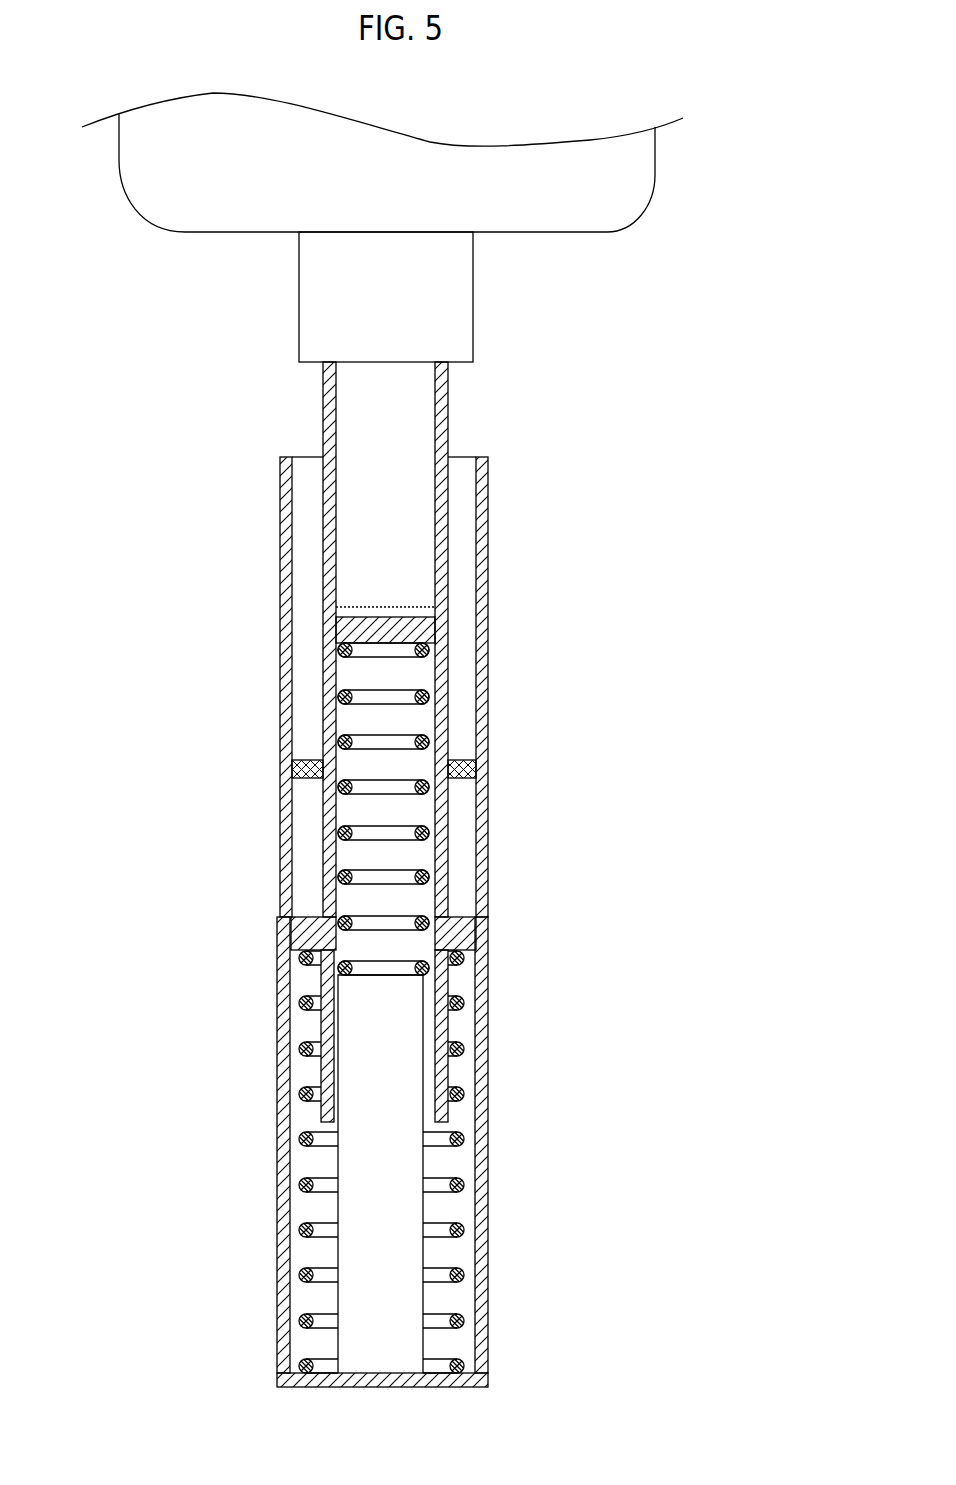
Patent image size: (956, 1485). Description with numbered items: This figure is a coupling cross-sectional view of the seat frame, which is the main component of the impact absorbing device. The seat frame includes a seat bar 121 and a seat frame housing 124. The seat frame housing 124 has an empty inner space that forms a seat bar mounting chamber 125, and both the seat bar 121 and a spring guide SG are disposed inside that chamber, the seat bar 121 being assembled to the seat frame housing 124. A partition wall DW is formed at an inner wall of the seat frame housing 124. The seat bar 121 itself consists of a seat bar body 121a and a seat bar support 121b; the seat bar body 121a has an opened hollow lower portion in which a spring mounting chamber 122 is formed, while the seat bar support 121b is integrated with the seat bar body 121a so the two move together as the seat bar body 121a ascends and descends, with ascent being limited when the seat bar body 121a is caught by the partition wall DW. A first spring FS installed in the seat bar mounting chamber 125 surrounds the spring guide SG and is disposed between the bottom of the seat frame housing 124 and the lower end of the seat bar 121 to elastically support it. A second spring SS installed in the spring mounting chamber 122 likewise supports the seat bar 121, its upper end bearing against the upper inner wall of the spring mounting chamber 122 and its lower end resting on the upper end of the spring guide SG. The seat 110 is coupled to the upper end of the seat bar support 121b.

The seat 110 is at (582, 202).
The seat bar 121 is at (266, 742).
The seat bar body 121a is at (323, 1019).
The seat bar support 121b is at (323, 672).
The spring mounting chamber 122 is at (419, 860).
The seat frame housing 124 is at (483, 1163).
The seat bar mounting chamber 125 is at (462, 593).
The partition wall DW is at (465, 760).
The second spring SS is at (445, 878).
The first spring FS is at (455, 1055).
The spring guide SG is at (398, 1258).